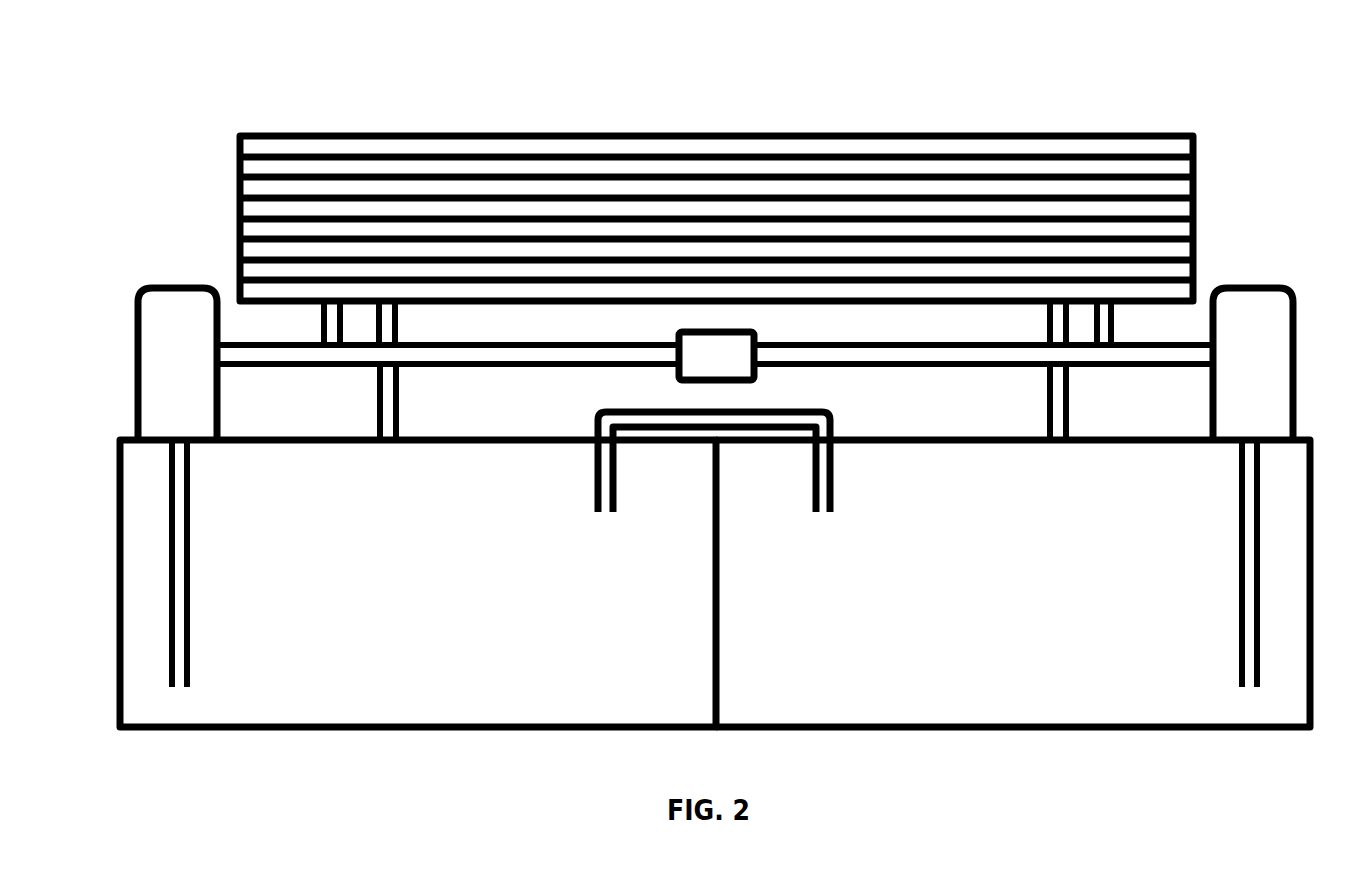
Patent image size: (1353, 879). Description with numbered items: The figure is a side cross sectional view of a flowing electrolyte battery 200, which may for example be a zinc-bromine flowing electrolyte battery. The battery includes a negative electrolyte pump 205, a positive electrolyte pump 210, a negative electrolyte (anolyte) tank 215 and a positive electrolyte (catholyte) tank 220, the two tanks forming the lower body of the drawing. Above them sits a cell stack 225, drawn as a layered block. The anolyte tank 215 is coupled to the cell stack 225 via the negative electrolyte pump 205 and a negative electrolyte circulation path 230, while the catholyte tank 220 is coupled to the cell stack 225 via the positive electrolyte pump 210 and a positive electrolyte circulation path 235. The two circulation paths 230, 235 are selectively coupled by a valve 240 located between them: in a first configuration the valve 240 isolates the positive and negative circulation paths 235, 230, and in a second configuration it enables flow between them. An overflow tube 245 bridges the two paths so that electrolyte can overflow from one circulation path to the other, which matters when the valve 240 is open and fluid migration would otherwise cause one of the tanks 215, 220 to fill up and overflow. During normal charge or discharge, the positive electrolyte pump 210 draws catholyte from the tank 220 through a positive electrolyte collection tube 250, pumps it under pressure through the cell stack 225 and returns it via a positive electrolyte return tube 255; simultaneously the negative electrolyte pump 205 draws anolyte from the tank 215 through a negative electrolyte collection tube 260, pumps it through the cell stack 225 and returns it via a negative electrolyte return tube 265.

The flowing electrolyte battery 200 is at (137, 94).
The negative electrolyte pump 205 is at (1333, 351).
The positive electrolyte pump 210 is at (137, 371).
The negative electrolyte (anolyte) tank 215 is at (982, 563).
The positive electrolyte (catholyte) tank 220 is at (400, 563).
The cell stack 225 is at (237, 230).
The negative electrolyte circulation path 230 is at (1168, 367).
The positive electrolyte circulation path 235 is at (263, 368).
The valve 240 is at (684, 329).
The overflow tube 245 is at (598, 413).
The positive electrolyte collection tube 250 is at (193, 588).
The positive electrolyte return tube 255 is at (378, 422).
The negative electrolyte collection tube 260 is at (1238, 565).
The negative electrolyte return tube 265 is at (1048, 426).